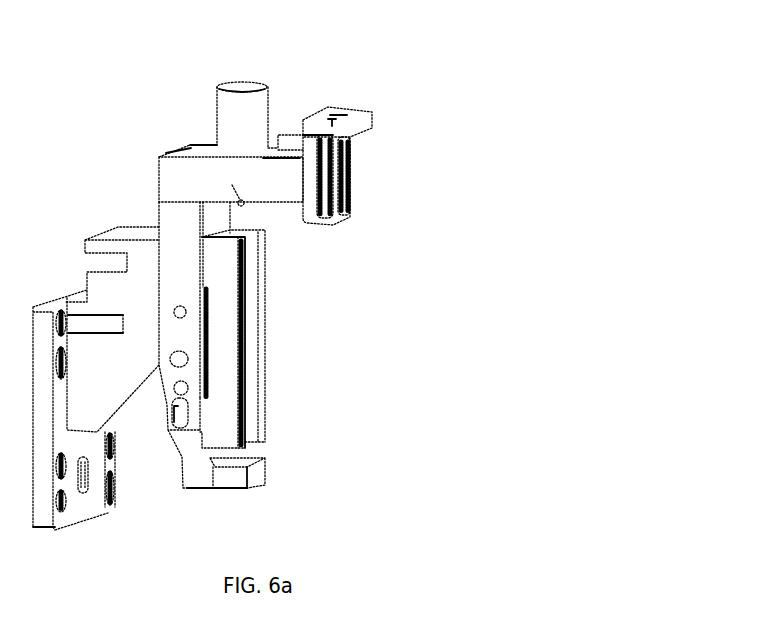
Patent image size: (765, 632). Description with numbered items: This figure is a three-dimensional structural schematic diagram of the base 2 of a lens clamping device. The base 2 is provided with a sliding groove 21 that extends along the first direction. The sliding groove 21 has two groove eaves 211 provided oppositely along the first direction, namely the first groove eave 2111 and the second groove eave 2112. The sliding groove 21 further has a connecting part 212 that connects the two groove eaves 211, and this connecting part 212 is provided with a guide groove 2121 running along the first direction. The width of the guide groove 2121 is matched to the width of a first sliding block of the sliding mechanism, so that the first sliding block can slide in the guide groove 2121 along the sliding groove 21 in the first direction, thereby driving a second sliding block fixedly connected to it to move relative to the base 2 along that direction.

The base 2 is at (270, 275).
The sliding groove 21 is at (473, 252).
The groove eaves 211 is at (397, 377).
The first groove eave 2111 is at (247, 257).
The second groove eave 2112 is at (232, 473).
The connecting part 212 is at (160, 372).
The guide groove 2121 is at (223, 407).